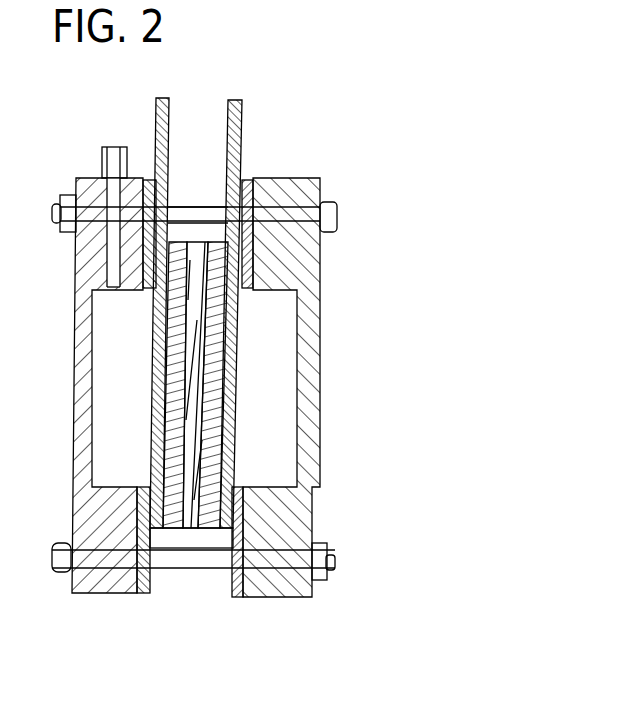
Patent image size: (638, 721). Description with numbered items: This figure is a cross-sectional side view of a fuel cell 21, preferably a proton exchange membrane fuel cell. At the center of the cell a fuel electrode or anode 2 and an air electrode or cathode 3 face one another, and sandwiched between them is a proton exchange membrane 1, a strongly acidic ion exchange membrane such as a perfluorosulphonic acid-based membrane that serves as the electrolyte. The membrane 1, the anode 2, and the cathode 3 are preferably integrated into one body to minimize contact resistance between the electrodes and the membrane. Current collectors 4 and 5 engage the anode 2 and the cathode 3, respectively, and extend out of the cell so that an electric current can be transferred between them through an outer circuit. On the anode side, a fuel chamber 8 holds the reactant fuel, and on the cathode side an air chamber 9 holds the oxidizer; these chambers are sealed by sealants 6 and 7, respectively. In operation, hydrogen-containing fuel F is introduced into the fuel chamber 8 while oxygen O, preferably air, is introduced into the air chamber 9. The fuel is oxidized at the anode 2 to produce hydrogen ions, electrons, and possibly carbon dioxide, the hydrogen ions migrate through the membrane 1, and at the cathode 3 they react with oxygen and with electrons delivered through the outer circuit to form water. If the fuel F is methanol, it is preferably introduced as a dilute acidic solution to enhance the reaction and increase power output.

The proton exchange membrane 1 is at (189, 532).
The fuel electrode (anode) 2 is at (172, 532).
The air electrode, oxidizer electrode (cathode) 3 is at (208, 532).
The current collector 4 is at (157, 121).
The current collector 5 is at (243, 129).
The sealant 6 is at (143, 593).
The sealant 7 is at (253, 259).
The fuel chamber 8 is at (111, 407).
The air chamber 9 is at (273, 411).
The fuel cell 21 is at (438, 214).
The hydrogen-containing fuel F is at (113, 142).
The oxygen O is at (558, 8).